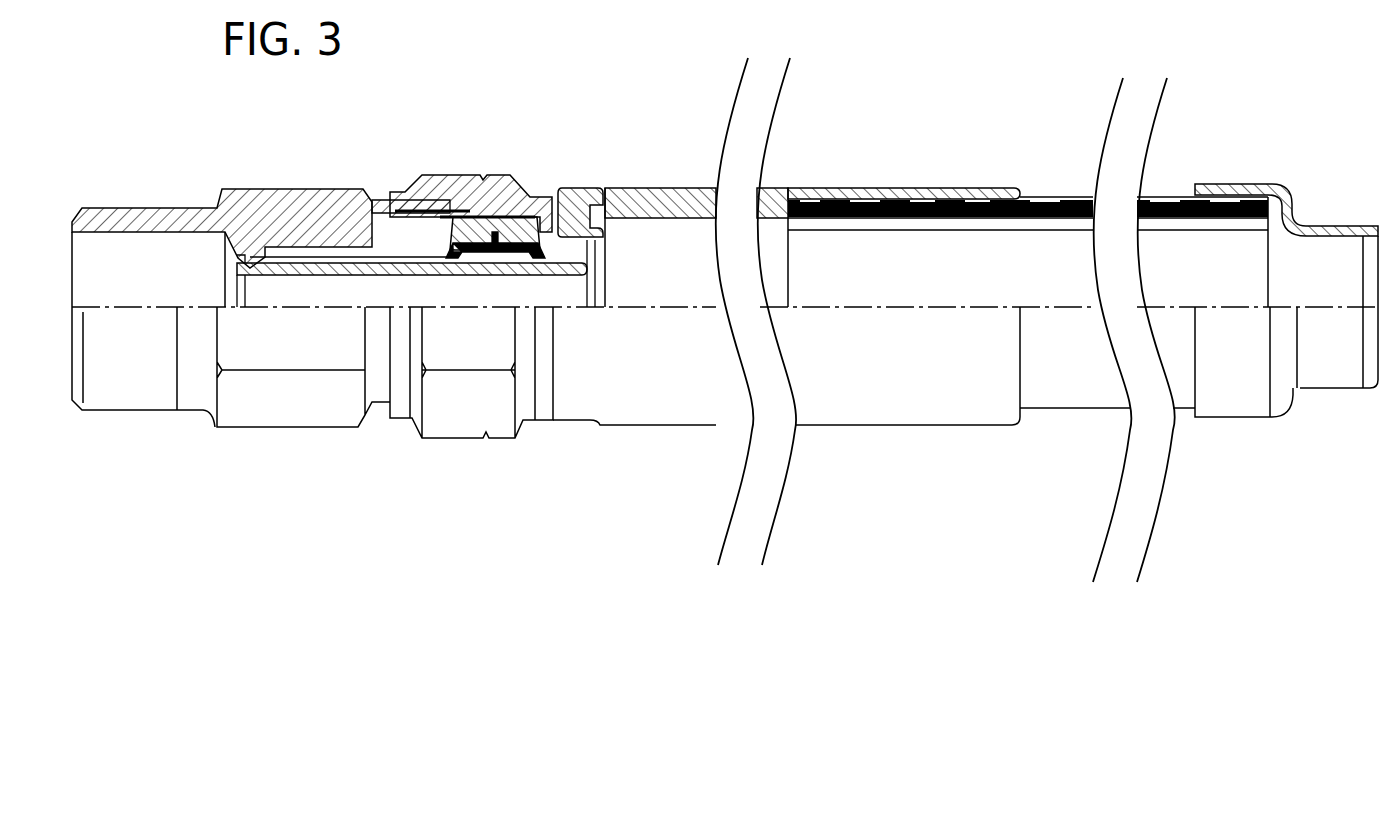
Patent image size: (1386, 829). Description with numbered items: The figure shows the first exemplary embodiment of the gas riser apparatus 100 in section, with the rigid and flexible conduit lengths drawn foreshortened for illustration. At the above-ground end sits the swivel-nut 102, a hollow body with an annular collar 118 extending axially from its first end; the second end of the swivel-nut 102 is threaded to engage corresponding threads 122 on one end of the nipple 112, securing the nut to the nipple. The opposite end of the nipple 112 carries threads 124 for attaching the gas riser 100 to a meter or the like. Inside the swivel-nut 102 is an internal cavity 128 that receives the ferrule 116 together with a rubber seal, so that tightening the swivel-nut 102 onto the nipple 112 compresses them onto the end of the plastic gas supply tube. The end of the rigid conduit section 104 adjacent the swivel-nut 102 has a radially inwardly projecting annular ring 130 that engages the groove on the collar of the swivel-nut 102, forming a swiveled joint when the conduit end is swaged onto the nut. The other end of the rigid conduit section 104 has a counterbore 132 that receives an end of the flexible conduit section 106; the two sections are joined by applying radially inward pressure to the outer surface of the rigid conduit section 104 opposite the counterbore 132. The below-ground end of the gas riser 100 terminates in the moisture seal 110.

The gas riser apparatus 100 is at (934, 54).
The swivel-nut 102 is at (451, 422).
The rigid conduit section 104 is at (862, 405).
The flexible conduit section 106 is at (1047, 392).
The moisture seal 110 is at (1247, 402).
The nipple 112 is at (274, 412).
The ferrule 116 is at (543, 258).
The annular collar 118 is at (595, 238).
The threads 122 is at (400, 192).
The threads 124 is at (117, 208).
The internal cavity 128 is at (500, 240).
The annular ring 130 is at (603, 220).
The counterbore 132 is at (870, 195).